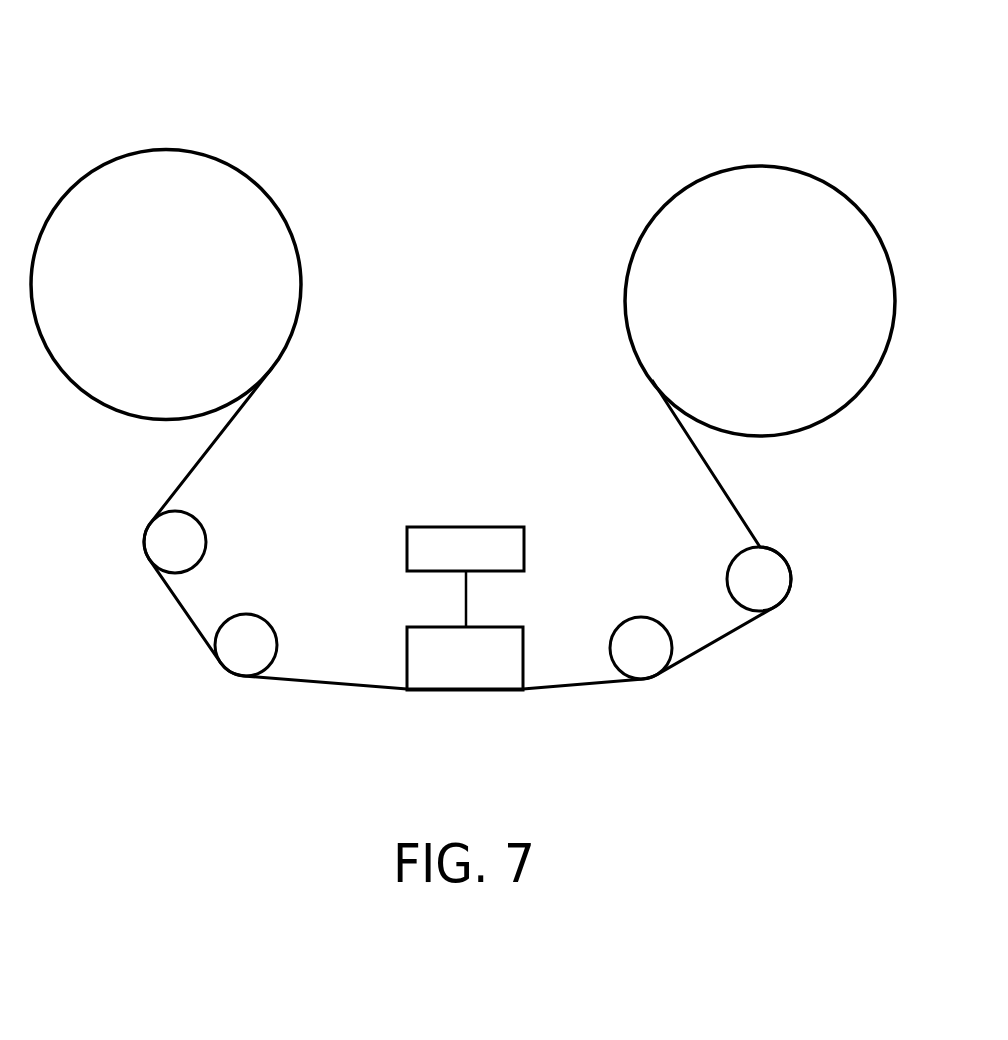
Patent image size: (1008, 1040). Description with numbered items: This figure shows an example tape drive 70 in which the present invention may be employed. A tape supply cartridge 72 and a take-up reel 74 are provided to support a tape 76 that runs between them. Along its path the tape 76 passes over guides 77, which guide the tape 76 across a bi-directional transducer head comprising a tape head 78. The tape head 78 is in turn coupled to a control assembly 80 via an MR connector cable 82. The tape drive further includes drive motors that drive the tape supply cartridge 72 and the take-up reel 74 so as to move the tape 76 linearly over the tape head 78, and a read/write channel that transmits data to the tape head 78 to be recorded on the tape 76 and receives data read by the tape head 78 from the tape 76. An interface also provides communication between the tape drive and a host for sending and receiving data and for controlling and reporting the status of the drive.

The tape transport system 70 is at (158, 50).
The tape supply cartridge 72 is at (277, 203).
The take-up reel 74 is at (652, 215).
The tape 76 is at (326, 684).
The guides 77 is at (205, 527).
The tape head 78 is at (527, 636).
The control assembly 80 is at (448, 527).
The MR connector cable 82 is at (466, 597).